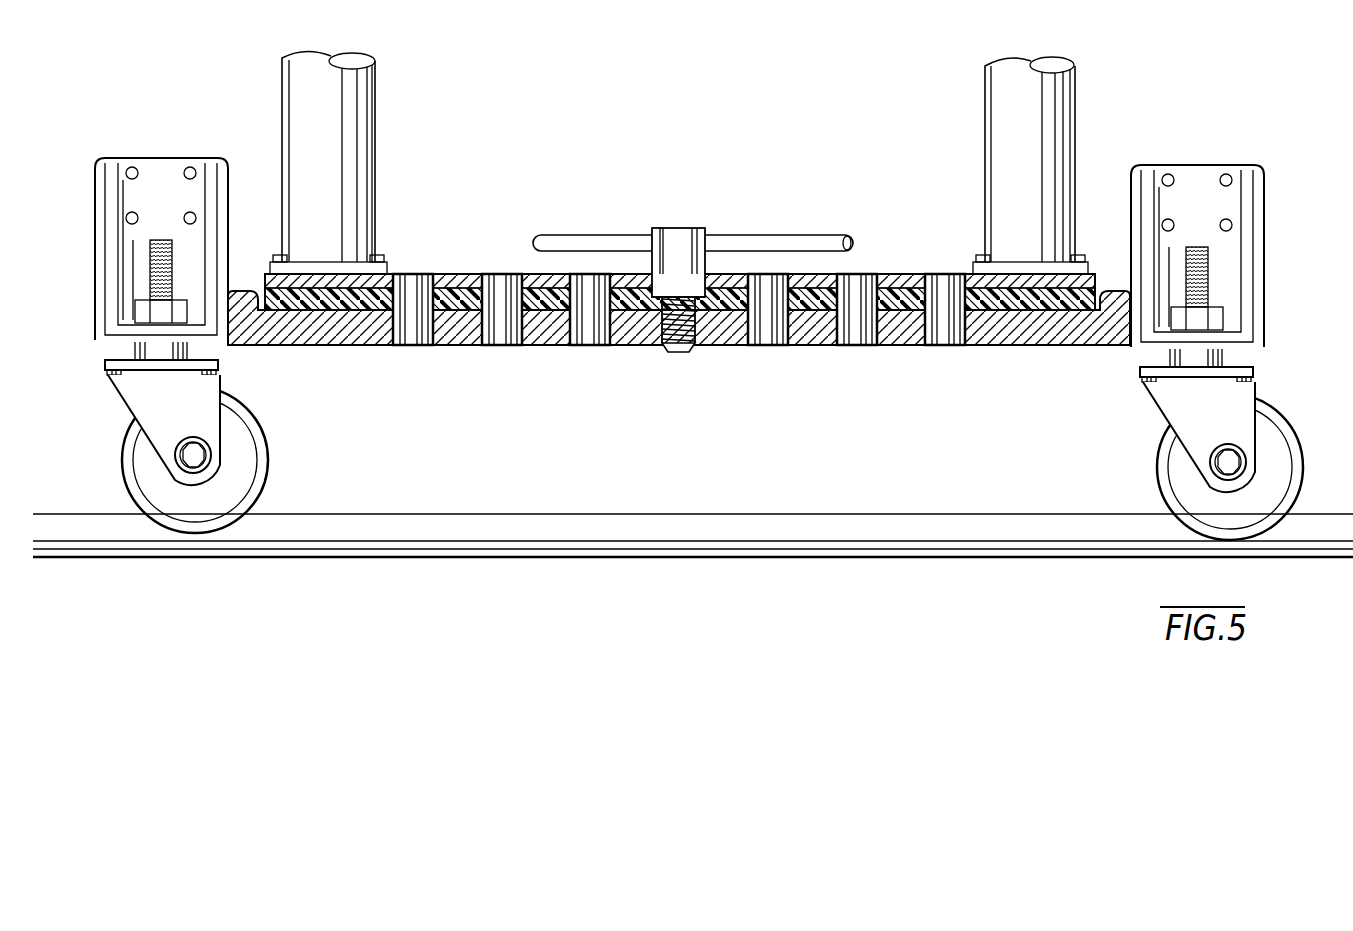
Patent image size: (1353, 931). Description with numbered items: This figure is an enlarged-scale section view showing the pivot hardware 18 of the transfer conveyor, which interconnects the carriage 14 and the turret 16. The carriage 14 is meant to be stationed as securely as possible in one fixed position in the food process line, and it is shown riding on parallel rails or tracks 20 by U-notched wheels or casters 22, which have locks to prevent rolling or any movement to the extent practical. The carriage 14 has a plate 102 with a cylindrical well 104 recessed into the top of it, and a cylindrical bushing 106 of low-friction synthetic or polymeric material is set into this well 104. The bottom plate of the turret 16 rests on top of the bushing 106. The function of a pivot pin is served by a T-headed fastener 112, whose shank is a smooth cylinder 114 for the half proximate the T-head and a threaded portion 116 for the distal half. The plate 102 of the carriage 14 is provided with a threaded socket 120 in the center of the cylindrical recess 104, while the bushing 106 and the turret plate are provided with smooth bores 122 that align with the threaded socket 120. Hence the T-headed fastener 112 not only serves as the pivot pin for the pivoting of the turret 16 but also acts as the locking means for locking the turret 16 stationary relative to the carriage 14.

The carriage 14 is at (1000, 345).
The turret 16 is at (888, 290).
The pivot hardware 18 is at (668, 273).
The rails or tracks 20 is at (857, 525).
The U-notched wheels or casters 22 is at (268, 442).
The plate 102 is at (679, 301).
The cylindrical well 104 is at (262, 300).
The cylindrical bushing 106 is at (464, 292).
The T-headed fastener 112 is at (787, 238).
The smooth cylinder 114 is at (683, 278).
The threaded portion 116 is at (698, 332).
The threaded socket 120 is at (650, 343).
The smooth bores 122 is at (657, 282).